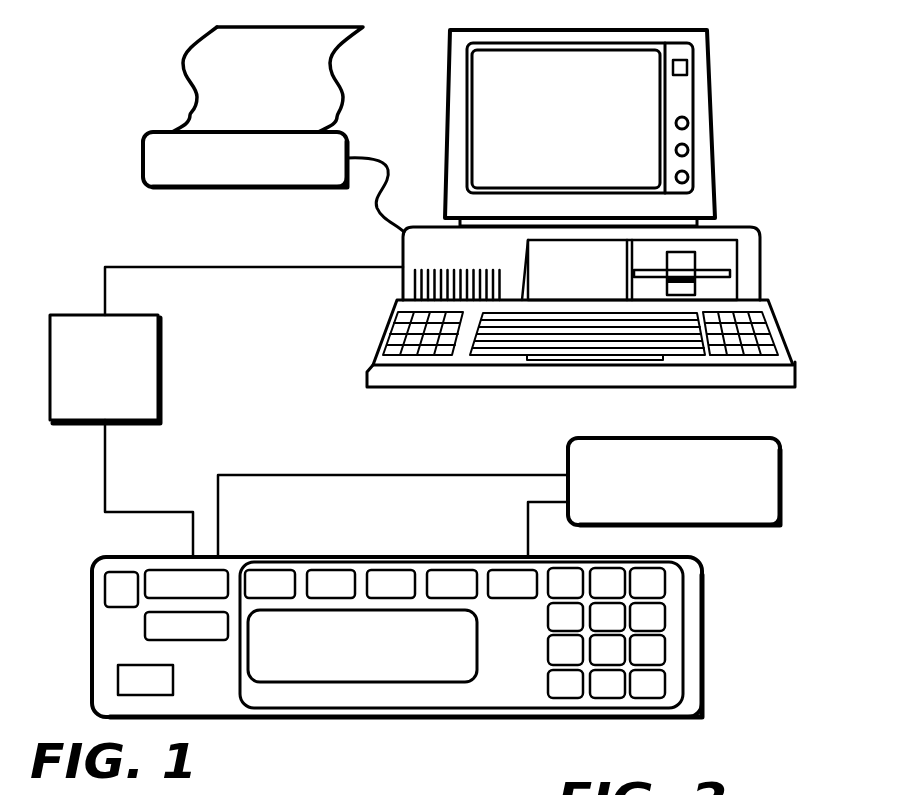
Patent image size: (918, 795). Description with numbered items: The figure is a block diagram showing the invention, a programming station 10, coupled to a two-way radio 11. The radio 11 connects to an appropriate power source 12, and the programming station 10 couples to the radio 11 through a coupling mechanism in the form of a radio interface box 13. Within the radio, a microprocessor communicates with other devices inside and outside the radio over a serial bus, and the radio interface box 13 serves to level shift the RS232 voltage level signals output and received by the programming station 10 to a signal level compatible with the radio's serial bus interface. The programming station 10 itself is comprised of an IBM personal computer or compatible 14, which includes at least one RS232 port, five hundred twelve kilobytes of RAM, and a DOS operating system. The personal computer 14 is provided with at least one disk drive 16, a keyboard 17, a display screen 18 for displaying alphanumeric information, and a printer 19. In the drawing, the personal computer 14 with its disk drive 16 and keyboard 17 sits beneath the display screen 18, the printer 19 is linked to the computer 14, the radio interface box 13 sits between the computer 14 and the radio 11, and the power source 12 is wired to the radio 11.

The programming station 10 is at (60, 673).
The two-way radio 11 is at (375, 557).
The power source 12 is at (678, 438).
The radio interface box 13 is at (162, 365).
The IBM personal computer or compatible 14 is at (588, 208).
The disk drive 16 is at (703, 263).
The keyboard 17 is at (772, 343).
The display screen 18 is at (690, 133).
The printer 19 is at (143, 157).